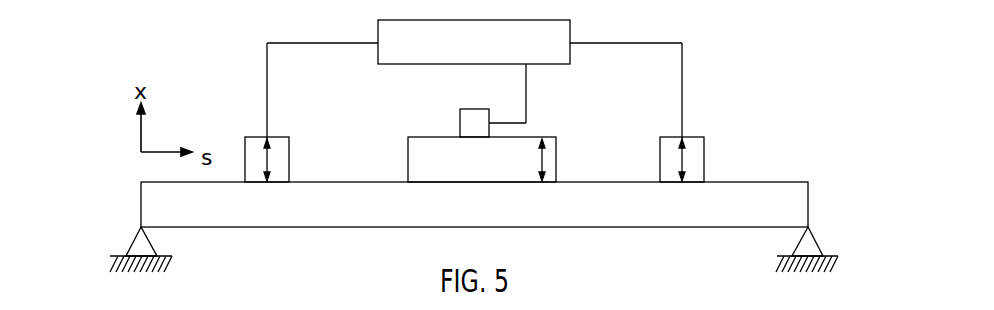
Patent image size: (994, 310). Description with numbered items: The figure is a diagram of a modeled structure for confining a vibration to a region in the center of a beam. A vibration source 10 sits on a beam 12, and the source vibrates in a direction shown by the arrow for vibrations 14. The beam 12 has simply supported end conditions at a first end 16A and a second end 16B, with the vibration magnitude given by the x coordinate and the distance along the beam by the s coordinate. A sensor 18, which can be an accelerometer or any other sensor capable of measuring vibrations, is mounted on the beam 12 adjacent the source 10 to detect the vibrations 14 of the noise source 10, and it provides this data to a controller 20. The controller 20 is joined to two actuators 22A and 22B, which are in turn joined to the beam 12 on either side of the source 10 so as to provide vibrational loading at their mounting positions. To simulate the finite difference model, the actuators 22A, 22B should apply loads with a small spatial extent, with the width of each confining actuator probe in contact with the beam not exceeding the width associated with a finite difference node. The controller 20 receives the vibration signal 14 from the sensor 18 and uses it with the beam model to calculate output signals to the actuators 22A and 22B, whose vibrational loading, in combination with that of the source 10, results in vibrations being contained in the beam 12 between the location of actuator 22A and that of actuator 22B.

The vibration source 10 is at (408, 137).
The beam 12 is at (380, 182).
The vibrations 14 is at (542, 138).
The first end 16A is at (141, 203).
The second end 16B is at (808, 203).
The sensor 18 is at (460, 110).
The controller 20 is at (378, 33).
The actuator 22A is at (245, 137).
The actuator 22B is at (704, 137).